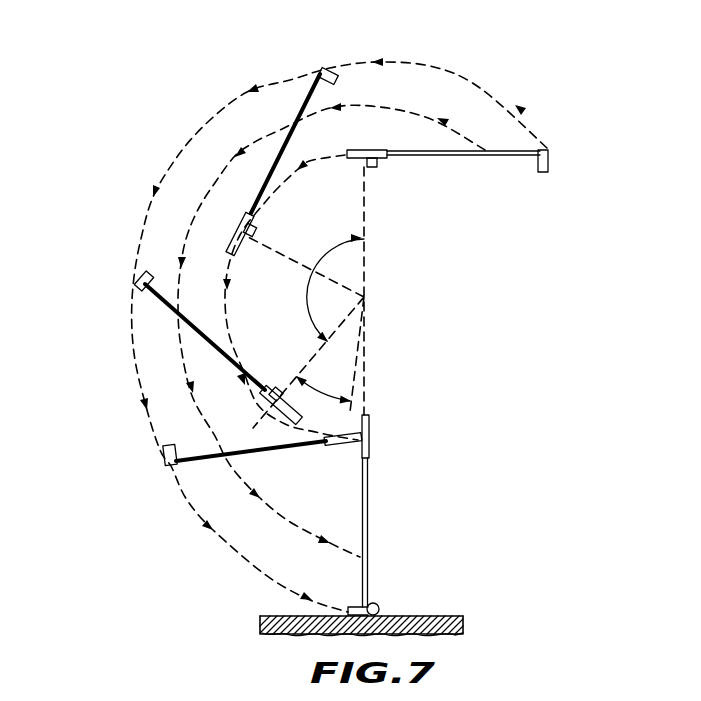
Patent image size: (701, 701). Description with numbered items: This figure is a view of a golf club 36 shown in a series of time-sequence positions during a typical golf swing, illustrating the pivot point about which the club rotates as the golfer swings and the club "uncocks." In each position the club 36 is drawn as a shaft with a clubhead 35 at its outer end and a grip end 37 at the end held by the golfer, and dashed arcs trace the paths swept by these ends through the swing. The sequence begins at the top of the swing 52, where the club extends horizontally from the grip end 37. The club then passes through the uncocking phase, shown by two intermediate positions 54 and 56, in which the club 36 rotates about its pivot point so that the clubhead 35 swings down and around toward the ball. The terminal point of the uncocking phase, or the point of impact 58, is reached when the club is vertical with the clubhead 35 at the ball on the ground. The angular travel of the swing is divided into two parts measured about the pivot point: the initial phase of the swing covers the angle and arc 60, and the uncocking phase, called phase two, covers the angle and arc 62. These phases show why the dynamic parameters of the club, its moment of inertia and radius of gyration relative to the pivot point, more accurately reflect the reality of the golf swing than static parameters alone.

The clubhead 35 is at (333, 78).
The golf club 36 is at (278, 148).
The grip end 37 is at (360, 150).
The top of the swing 52 is at (563, 157).
The uncocking phase 54 is at (129, 269).
The uncocking phase 56 is at (161, 455).
The point of impact 58 is at (385, 594).
The angle and arc of the initial phase 60 is at (324, 212).
The angle and arc of the uncocking phase 62 is at (324, 400).